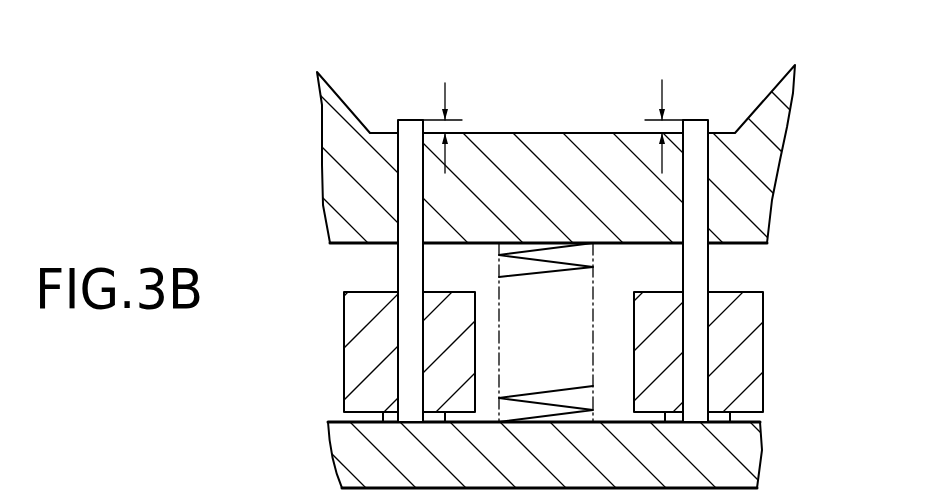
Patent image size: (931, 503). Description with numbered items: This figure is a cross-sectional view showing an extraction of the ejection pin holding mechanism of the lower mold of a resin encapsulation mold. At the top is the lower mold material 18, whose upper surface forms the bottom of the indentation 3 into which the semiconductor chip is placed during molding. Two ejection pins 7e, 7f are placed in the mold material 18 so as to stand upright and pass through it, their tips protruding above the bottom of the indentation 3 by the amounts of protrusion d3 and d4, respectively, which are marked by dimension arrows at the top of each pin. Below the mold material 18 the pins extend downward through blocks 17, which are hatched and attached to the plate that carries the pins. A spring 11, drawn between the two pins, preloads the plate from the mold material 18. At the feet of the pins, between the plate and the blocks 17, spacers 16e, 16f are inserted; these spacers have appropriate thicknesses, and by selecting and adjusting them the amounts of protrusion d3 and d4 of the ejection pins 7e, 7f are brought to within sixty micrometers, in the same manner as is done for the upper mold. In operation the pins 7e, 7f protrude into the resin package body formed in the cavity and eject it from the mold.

The indentation 3 is at (539, 116).
The mold material 18 is at (763, 122).
The ejection pin 7e is at (398, 183).
The ejection pin 7f is at (708, 197).
The spring 11 is at (580, 288).
The blocks 17 is at (765, 348).
The spacer 16e is at (383, 418).
The spacer 16f is at (730, 418).
The amount of protrusion d3 is at (455, 127).
The amount of protrusion d4 is at (679, 126).